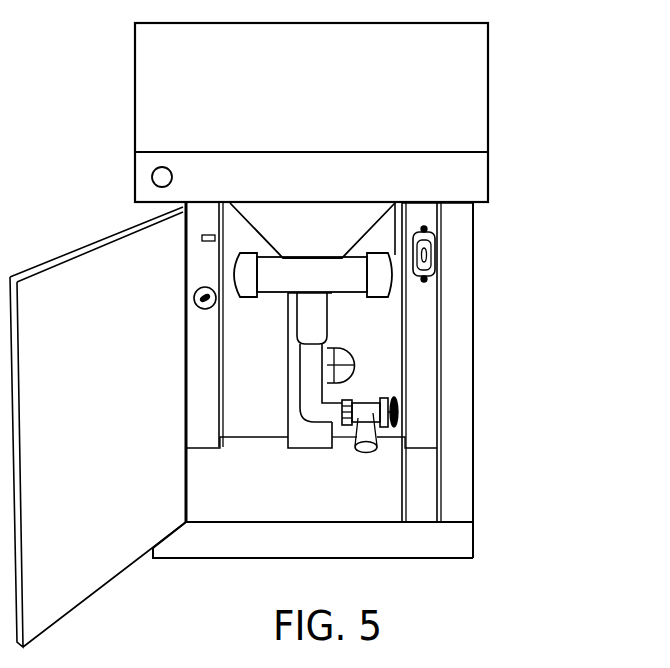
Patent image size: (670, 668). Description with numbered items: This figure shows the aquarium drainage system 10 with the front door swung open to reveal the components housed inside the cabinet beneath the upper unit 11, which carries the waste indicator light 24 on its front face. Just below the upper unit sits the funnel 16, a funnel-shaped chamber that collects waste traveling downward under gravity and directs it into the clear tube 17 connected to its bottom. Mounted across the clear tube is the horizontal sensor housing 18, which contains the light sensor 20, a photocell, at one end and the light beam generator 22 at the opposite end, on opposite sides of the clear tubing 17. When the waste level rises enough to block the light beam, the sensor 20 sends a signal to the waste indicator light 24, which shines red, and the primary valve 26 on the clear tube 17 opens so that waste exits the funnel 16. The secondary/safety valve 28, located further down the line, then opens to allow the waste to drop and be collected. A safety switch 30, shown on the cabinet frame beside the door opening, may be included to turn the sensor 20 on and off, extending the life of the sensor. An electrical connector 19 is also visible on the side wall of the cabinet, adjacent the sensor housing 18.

The aquarium drainage system 10 is at (573, 185).
The housing 11 is at (487, 80).
The funnel 16 is at (318, 212).
The clear tube 17 is at (322, 323).
The sensor housing 18 is at (355, 278).
The electrical connector 19 is at (438, 243).
The light sensor 20 is at (230, 272).
The light beam generator 22 is at (398, 202).
The waste indicator light 24 is at (152, 177).
The primary valve 26 is at (352, 357).
The secondary/safety valve 28 is at (400, 413).
The safety switch 30 is at (195, 290).